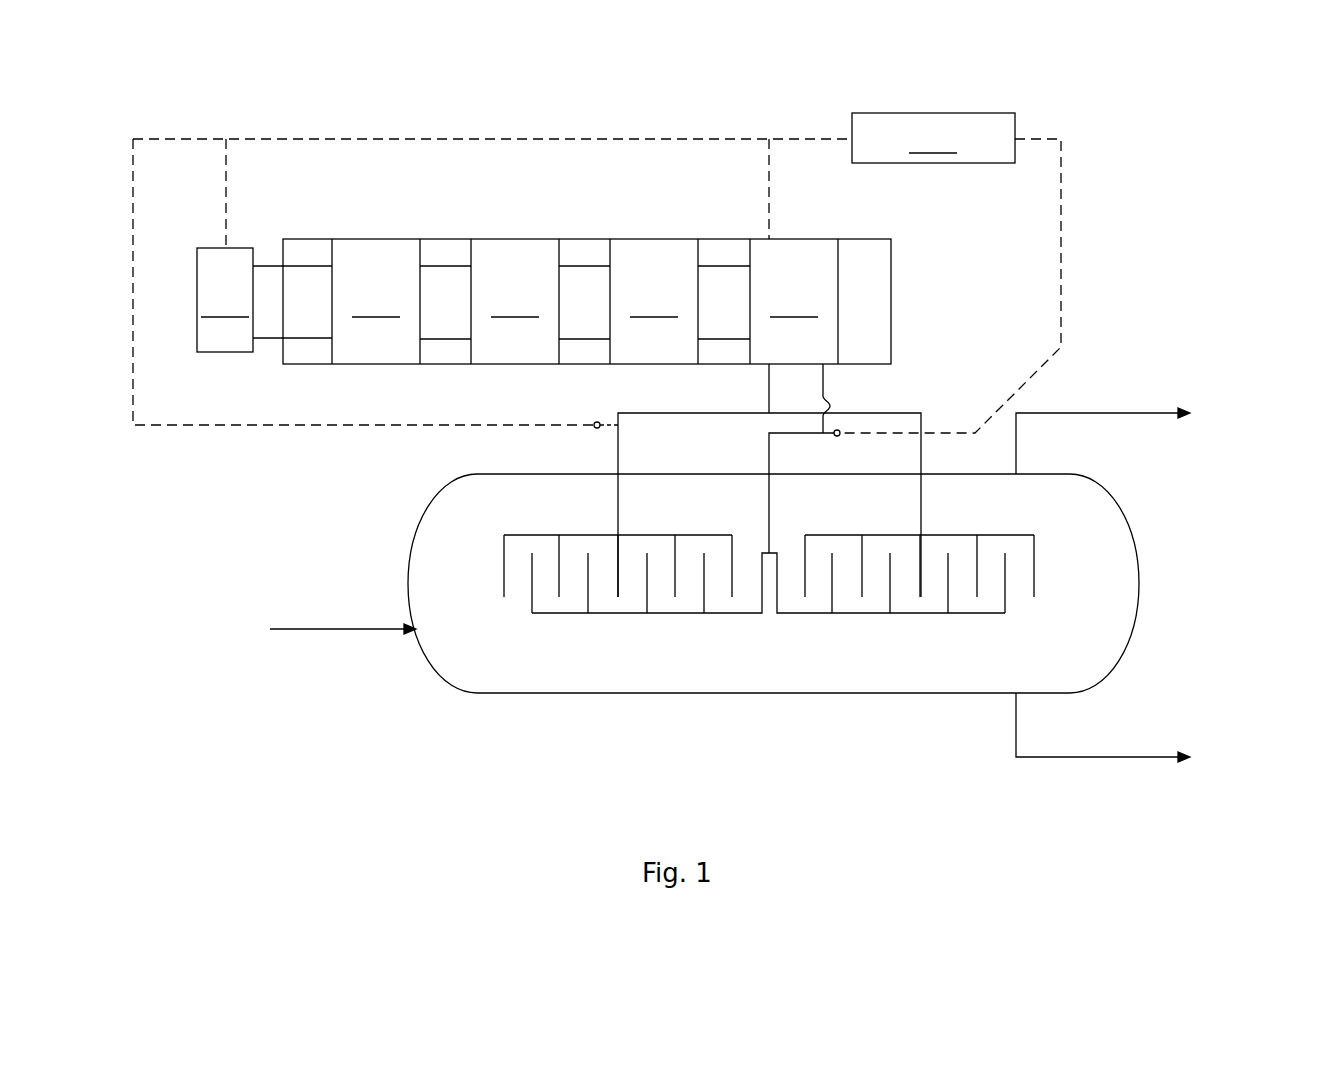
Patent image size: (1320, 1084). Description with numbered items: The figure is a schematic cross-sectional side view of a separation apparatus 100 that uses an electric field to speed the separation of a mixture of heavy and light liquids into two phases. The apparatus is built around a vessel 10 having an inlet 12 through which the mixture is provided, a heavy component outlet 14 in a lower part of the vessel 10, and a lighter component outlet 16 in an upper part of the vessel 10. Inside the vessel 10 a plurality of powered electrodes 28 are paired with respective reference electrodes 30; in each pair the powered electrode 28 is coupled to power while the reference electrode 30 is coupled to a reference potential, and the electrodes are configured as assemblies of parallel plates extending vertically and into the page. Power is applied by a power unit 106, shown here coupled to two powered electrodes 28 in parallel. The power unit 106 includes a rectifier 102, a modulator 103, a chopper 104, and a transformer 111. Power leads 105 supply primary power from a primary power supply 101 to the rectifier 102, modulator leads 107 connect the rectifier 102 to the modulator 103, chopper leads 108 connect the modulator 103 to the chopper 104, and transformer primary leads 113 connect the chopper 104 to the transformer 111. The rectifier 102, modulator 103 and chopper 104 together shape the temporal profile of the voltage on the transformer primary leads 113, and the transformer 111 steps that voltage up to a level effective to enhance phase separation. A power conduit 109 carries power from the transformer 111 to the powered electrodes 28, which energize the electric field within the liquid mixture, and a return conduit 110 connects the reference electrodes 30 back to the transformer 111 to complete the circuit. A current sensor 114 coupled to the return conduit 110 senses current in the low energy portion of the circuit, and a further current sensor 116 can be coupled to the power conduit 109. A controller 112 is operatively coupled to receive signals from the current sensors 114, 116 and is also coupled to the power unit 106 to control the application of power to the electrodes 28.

The vessel 10 is at (430, 505).
The inlet 12 is at (412, 633).
The heavy component outlet 14 is at (1016, 700).
The lighter component outlet 16 is at (1016, 463).
The powered electrode 28 is at (504, 535).
The reference electrode 30 is at (532, 613).
The separation apparatus 100 is at (1157, 274).
The primary power supply 101 is at (225, 300).
The rectifier 102 is at (377, 303).
The modulator 103 is at (516, 303).
The chopper 104 is at (655, 303).
The power leads 105 is at (274, 339).
The power unit 106 is at (891, 284).
The modulator leads 107 is at (434, 263).
The chopper leads 108 is at (579, 266).
The power conduit 109 is at (769, 389).
The return conduit 110 is at (826, 390).
The transformer 111 is at (795, 303).
The controller 112 is at (933, 138).
The transformer primary leads 113 is at (722, 265).
The current sensor 114 is at (834, 437).
The current sensor 116 is at (593, 429).